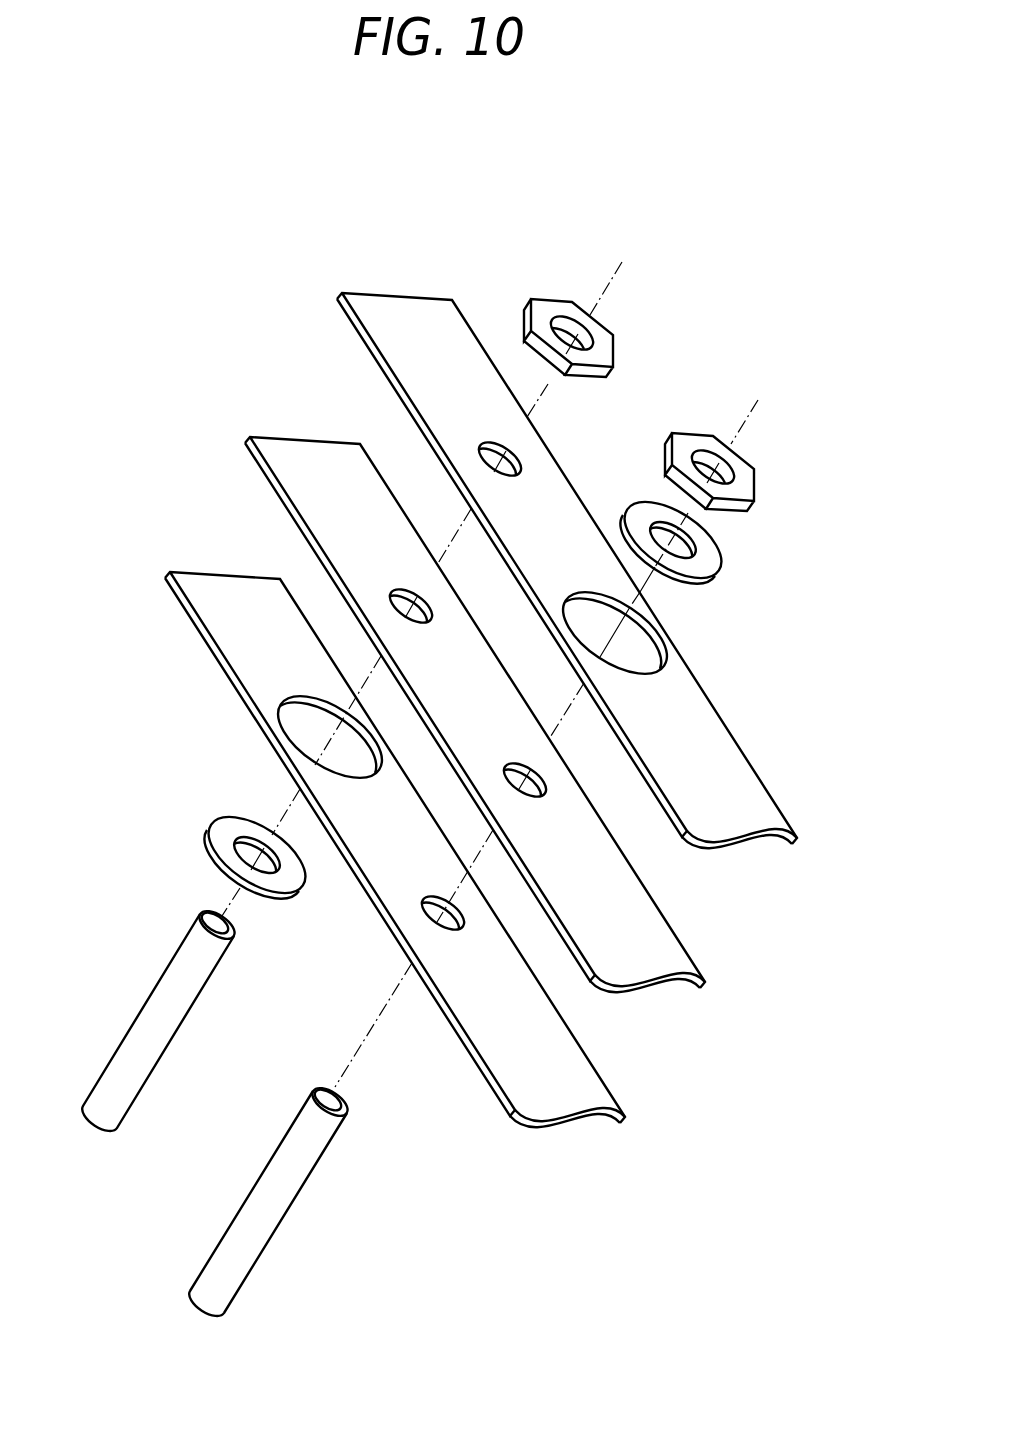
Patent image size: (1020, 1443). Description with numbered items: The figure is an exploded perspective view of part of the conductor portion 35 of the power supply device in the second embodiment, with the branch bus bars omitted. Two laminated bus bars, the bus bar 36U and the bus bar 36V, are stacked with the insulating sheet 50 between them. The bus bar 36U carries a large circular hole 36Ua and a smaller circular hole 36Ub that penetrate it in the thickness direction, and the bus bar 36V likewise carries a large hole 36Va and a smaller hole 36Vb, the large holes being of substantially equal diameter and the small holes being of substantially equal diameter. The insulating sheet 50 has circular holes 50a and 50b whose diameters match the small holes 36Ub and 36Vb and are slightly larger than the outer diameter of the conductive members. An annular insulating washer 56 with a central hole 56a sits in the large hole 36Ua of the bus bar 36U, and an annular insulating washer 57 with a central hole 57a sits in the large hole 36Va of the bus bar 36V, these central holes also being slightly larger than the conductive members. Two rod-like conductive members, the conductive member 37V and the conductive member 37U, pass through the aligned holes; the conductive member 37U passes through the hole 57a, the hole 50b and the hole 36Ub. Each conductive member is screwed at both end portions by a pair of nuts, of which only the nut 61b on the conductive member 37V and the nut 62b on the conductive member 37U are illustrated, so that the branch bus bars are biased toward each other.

The conductor portion 35 is at (456, 184).
The bus bar 36V is at (338, 291).
The hole 36Va is at (643, 618).
The hole 36Vb is at (500, 447).
The bus bar 36U is at (168, 571).
The hole 36Ua is at (302, 703).
The hole 36Ub is at (450, 922).
The insulating sheet 50 is at (250, 435).
The hole 50a is at (408, 597).
The hole 50b is at (545, 782).
The insulating washer 56 is at (223, 838).
The hole 56a is at (253, 843).
The insulating washer 57 is at (714, 546).
The hole 57a is at (693, 527).
The nut 61b is at (603, 352).
The nut 62b is at (745, 480).
The conductive member 37V is at (157, 1008).
The conductive member 37U is at (280, 1197).